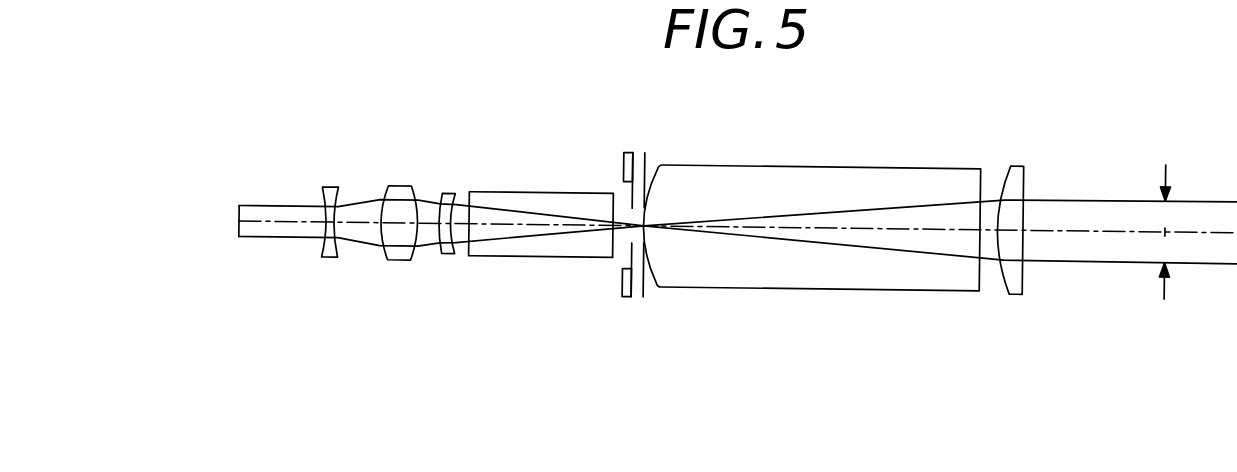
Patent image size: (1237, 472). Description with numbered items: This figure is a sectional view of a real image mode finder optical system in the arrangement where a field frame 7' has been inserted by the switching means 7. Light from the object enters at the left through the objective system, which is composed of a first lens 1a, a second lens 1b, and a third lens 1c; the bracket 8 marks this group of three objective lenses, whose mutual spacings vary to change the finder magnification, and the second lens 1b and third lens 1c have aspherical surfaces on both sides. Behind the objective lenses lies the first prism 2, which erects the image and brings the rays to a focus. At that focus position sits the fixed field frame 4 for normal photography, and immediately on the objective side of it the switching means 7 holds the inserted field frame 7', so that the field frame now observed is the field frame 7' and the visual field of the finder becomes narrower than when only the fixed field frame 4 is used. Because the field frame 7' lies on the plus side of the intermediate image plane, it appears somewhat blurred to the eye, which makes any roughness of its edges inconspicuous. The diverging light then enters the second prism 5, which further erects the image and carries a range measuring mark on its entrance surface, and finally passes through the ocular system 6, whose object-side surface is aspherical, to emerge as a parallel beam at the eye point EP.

The first lens 1a is at (334, 185).
The second lens 1b is at (400, 186).
The third lens 1c is at (453, 183).
The beam expander lens group 8 is at (393, 225).
The first prism 2 is at (542, 191).
The switching means 7 is at (631, 190).
The field frame 7' is at (608, 214).
The fixed field frame 4 is at (670, 204).
The second prism 5 is at (812, 188).
The ocular system 6 is at (1012, 192).
The exit pupil EP is at (1161, 216).